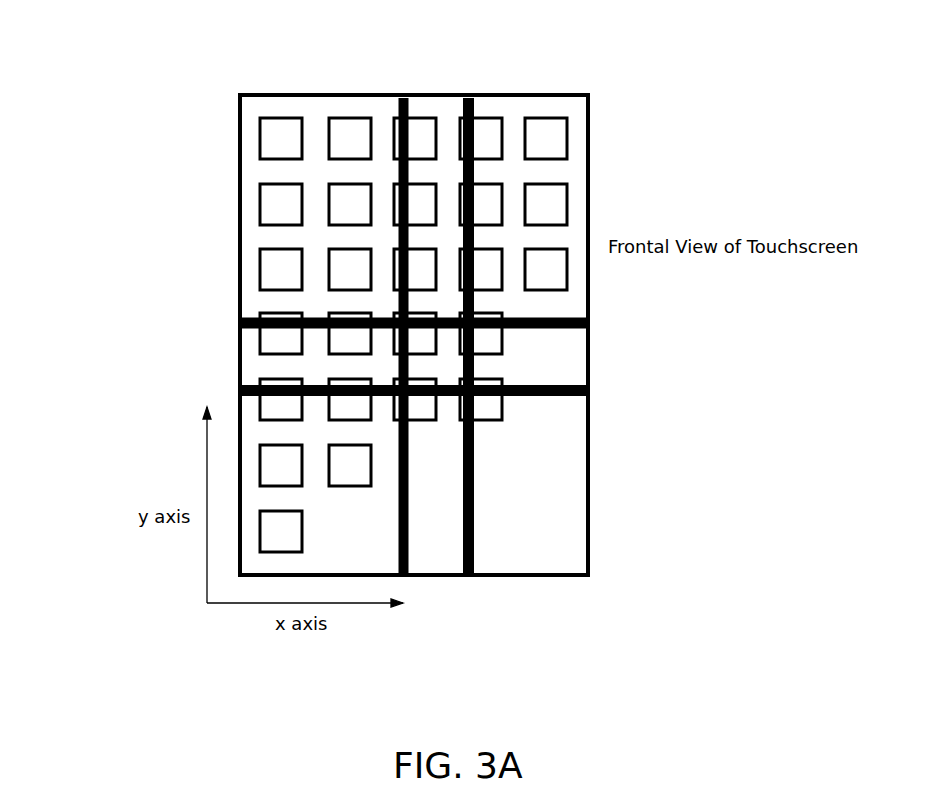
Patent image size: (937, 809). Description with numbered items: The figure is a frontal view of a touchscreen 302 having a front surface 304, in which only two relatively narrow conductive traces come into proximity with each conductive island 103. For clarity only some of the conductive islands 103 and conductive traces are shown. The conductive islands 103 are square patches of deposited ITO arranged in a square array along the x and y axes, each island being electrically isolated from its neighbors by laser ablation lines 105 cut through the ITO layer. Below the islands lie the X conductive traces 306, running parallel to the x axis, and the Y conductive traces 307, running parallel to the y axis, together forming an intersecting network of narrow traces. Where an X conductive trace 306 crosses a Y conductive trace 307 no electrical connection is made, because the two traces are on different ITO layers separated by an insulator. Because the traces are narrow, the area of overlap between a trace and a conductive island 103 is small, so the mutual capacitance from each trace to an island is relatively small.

The conductive island 103 is at (270, 128).
The laser ablation line 105 is at (384, 130).
The touchscreen 302 is at (557, 88).
The front surface 304 is at (529, 471).
The X conductive trace 306 is at (255, 390).
The Y conductive trace 307 is at (403, 578).